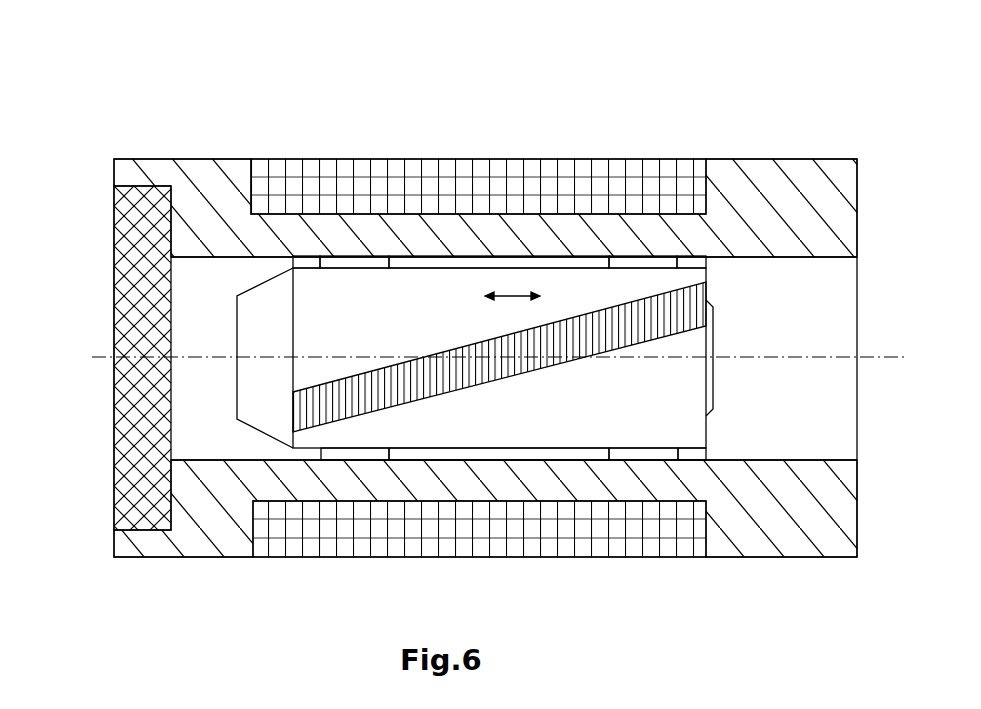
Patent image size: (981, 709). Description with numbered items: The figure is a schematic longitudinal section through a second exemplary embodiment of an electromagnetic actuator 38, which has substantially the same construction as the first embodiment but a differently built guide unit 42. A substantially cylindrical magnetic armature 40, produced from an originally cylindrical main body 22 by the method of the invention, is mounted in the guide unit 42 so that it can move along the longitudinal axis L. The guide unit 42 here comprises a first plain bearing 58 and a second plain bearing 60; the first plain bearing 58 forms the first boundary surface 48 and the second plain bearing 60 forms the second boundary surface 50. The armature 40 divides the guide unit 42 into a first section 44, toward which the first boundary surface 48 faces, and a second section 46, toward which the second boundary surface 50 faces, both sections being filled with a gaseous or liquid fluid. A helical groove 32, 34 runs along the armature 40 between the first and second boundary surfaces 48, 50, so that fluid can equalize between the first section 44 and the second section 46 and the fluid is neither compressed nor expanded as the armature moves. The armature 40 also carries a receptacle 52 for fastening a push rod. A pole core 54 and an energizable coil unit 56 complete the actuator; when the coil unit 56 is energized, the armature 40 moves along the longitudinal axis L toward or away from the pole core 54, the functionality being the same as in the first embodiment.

The electromagnetic actuator 38 is at (97, 86).
The pole core 54 is at (120, 223).
The coil unit 56 is at (567, 178).
The guide unit 42 is at (500, 353).
The first boundary surface 48 is at (298, 262).
The second boundary surface 50 is at (682, 453).
The first plain bearing 58 is at (361, 262).
The second plain bearing 60 is at (652, 263).
The main body 22 is at (503, 358).
The magnetic armature 40 is at (395, 308).
The receptacle 52 is at (283, 398).
The magnet 32 is at (499, 357).
The helical groove 34 is at (598, 338).
The first section 44 is at (213, 427).
The second section 46 is at (785, 415).
The longitudinal axis L is at (97, 362).